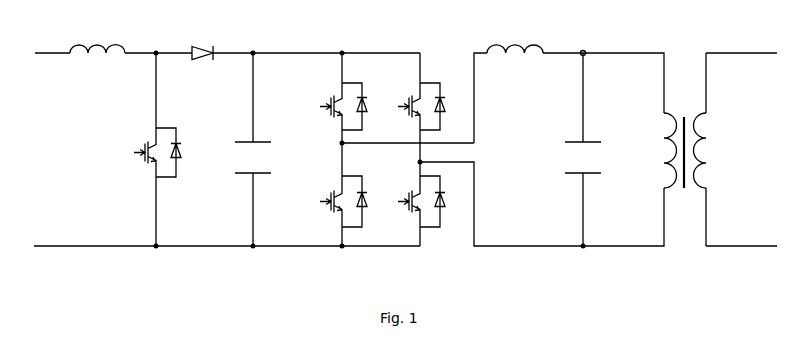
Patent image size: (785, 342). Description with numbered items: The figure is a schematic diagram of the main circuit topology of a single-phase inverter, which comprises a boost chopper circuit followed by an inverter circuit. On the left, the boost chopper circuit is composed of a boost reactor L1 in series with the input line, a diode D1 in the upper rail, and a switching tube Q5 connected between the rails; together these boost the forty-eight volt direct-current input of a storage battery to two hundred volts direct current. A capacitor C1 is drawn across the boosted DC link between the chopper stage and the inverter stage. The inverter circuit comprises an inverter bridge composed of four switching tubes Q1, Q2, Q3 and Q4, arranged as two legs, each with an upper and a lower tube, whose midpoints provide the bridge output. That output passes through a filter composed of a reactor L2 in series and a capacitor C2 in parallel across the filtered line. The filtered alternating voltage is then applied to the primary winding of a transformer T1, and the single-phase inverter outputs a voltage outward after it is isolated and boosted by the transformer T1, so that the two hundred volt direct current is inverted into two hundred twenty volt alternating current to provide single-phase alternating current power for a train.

The boost reactor L1 is at (97, 40).
The diode D1 is at (202, 44).
The switching tube Q5 is at (149, 149).
The DC link capacitor C1 is at (247, 149).
The switching tube Q1 is at (338, 98).
The switching tube Q2 is at (338, 194).
The switching tube Q3 is at (420, 107).
The switching tube Q4 is at (420, 203).
The reactor L2 is at (515, 40).
The capacitor C2 is at (578, 149).
The transformer T1 is at (671, 147).